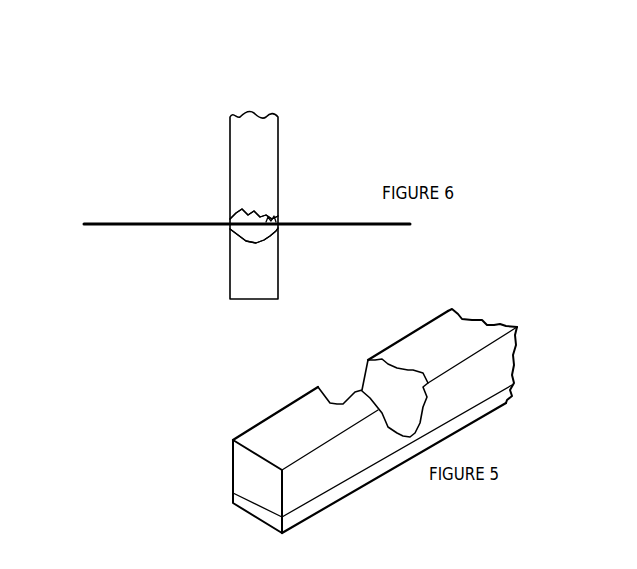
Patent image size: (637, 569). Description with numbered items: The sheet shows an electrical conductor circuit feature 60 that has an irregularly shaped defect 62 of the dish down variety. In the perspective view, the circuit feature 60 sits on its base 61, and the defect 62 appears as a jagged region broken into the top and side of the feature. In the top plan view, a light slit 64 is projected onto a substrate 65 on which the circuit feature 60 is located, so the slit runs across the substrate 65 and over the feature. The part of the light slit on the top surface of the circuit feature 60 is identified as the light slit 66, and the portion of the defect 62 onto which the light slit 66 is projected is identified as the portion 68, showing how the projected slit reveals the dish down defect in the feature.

In FIG. 6, the electrical conductor circuit feature 60 is at (252, 112).
In FIG. 5, the electrical conductor circuit feature 60 is at (450, 340).
In FIG. 5, the base 61 is at (243, 505).
In FIG. 6, the defect 62 is at (268, 228).
In FIG. 5, the defect 62 is at (387, 385).
In FIG. 6, the light slit 64 is at (154, 223).
In FIG. 6, the substrate 65 is at (148, 273).
In FIG. 6, the light slit on top surface of circuit feature 66 is at (253, 220).
In FIG. 6, the portion of defect onto which light slit is projected 68 is at (247, 243).